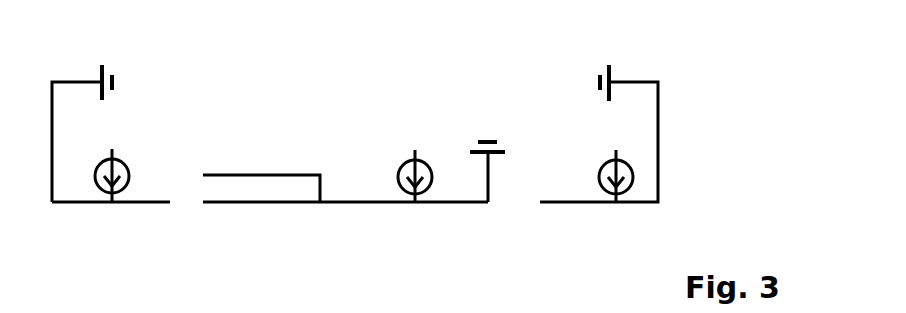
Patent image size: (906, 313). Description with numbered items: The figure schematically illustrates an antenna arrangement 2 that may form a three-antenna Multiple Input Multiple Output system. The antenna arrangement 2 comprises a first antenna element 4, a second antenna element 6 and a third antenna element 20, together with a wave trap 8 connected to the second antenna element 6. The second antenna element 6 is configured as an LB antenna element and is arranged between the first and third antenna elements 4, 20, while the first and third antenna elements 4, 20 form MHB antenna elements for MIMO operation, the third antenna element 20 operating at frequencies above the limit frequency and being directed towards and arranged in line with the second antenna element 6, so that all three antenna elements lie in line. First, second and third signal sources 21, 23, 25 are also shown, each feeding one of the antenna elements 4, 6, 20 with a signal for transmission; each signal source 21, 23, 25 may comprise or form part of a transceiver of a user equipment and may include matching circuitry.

The antenna arrangement 2 is at (708, 83).
The first antenna element 4 is at (100, 203).
The second antenna element 6 is at (348, 203).
The wave trap 8 is at (288, 175).
The third antenna element 20 is at (572, 203).
The first signal source 21 is at (122, 160).
The second signal source 23 is at (421, 162).
The third signal source 25 is at (603, 160).